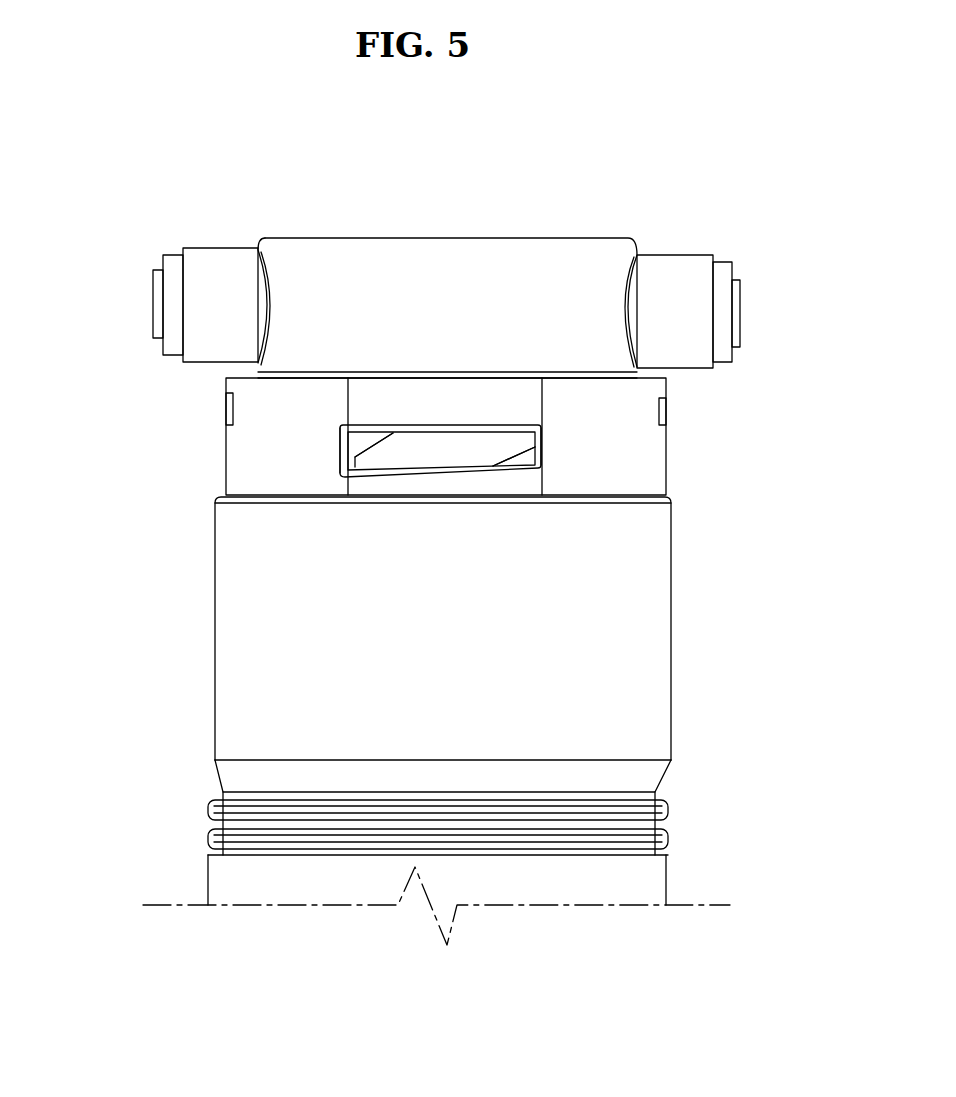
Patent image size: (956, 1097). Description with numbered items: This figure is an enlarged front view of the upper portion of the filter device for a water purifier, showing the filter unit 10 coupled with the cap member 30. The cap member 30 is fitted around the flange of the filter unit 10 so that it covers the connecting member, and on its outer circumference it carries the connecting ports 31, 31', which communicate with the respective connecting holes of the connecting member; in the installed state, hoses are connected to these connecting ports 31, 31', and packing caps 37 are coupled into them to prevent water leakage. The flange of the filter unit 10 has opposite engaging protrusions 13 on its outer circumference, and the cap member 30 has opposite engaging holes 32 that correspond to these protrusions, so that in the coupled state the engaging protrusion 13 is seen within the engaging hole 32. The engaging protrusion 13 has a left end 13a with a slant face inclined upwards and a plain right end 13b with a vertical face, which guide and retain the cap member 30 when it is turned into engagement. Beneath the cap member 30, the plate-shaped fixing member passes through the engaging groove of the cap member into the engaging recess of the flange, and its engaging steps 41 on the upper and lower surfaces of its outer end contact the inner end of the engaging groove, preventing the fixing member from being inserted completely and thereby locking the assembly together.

The filter unit 10 is at (185, 686).
The engaging protrusion 13 is at (423, 505).
The left end 13a is at (367, 443).
The plain right end 13b is at (543, 443).
The cap member 30 is at (520, 216).
The connecting port 31 is at (717, 260).
The connecting port 31' is at (180, 258).
The engaging hole 32 is at (523, 470).
The packing cap 37 is at (742, 288).
The engaging step 41 is at (226, 408).